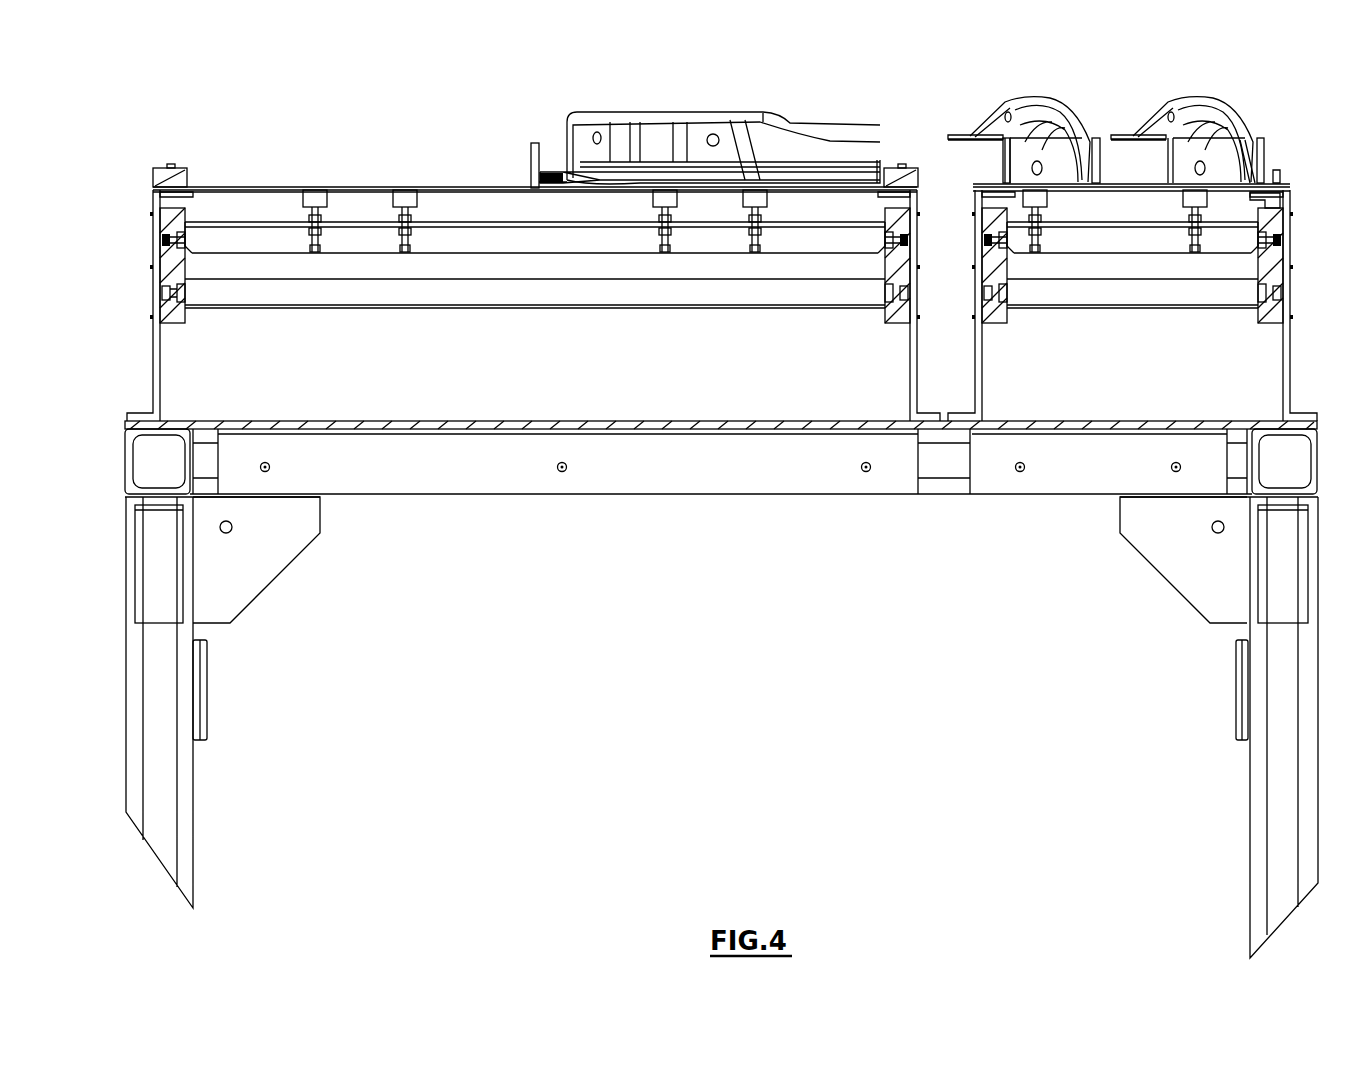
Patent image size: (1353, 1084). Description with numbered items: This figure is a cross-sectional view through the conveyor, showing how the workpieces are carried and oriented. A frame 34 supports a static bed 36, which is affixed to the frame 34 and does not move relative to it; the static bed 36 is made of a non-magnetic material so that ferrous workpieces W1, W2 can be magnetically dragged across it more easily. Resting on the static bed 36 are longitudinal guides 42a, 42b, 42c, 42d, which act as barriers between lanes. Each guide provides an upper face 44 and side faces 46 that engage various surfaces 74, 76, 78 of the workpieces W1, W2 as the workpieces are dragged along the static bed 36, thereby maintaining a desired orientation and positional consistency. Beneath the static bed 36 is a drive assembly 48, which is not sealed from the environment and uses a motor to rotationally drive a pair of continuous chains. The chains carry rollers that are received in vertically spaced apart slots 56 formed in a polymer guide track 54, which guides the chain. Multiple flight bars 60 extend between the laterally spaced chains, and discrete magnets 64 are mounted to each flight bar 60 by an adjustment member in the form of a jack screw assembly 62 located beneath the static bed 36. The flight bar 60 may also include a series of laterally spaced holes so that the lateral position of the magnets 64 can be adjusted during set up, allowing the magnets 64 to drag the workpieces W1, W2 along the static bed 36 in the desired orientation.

The frame 34 is at (150, 368).
The static bed 36 is at (260, 188).
The longitudinal guide 42a is at (1000, 167).
The longitudinal guide 42b is at (1097, 136).
The longitudinal guide 42c is at (532, 147).
The longitudinal guide 42d is at (176, 172).
The upper face 44 is at (1156, 133).
The side faces 46 is at (1196, 250).
The drive assembly 48 is at (670, 300).
The polymer guide track 54 is at (180, 317).
The slots 56 is at (157, 253).
The flight bar 60 is at (228, 238).
The jack screw assembly 62 is at (423, 213).
The magnets 64 is at (408, 195).
The workpiece surface 74 is at (1223, 193).
The workpiece surface 76 is at (1133, 139).
The workpiece surface 78 is at (1255, 160).
The workpiece W1 is at (1121, 195).
The workpiece W2 is at (683, 143).